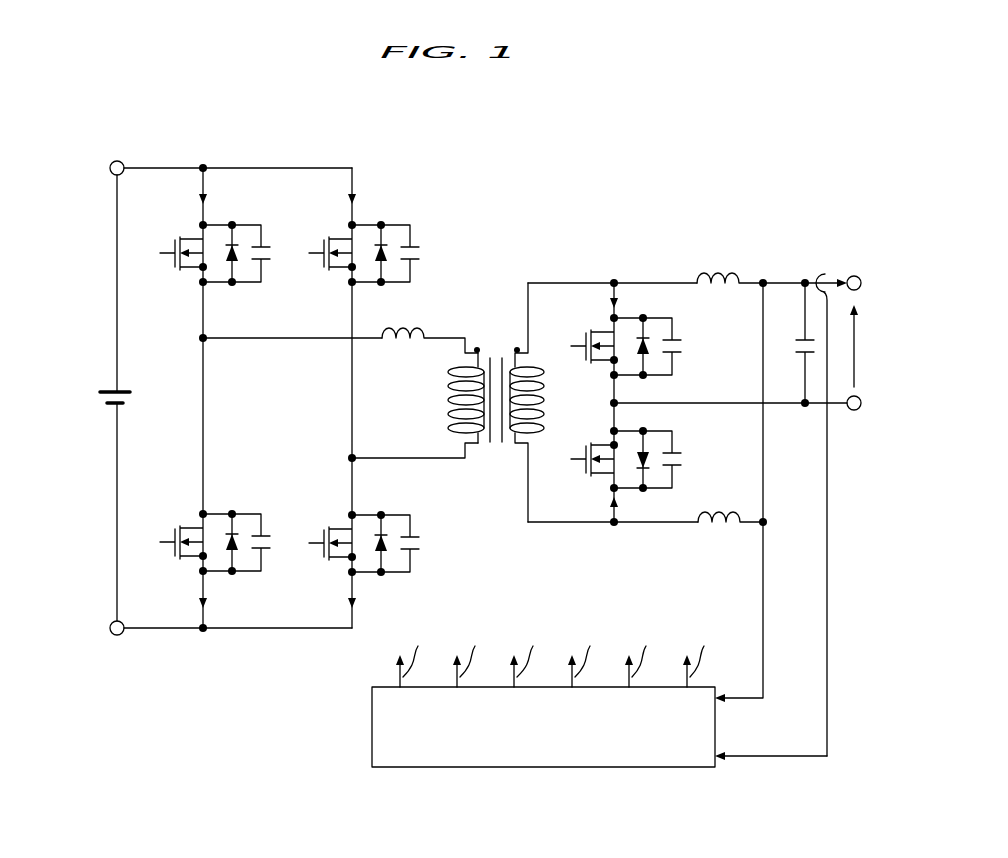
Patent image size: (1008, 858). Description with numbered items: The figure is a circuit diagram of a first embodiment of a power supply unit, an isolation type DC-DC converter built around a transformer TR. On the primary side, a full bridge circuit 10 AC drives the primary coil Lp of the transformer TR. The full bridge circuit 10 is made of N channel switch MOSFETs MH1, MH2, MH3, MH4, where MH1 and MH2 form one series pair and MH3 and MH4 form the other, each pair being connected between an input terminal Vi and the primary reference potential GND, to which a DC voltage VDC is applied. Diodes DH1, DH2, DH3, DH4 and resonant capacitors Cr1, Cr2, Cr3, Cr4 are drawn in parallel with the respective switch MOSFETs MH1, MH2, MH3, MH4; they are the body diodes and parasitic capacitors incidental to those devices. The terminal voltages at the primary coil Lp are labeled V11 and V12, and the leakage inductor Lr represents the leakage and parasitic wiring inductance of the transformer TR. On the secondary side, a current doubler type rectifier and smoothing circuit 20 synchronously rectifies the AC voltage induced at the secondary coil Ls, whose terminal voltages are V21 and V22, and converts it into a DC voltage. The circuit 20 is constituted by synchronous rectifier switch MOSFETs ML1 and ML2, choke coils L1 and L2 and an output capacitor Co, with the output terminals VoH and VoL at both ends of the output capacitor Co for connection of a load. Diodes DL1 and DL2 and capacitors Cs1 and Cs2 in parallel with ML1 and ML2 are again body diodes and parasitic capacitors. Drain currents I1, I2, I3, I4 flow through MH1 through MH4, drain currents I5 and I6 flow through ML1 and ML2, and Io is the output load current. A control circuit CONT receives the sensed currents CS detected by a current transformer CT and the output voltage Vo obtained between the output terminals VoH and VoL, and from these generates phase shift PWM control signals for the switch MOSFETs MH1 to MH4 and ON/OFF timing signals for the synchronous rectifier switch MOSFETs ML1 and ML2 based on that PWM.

The input terminal Vi is at (117, 161).
The primary reference potential GND is at (115, 637).
The DC voltage VDC is at (113, 391).
The full bridge circuit 10 is at (270, 155).
The current doubler type rectifier and smoothing circuit 20 is at (654, 193).
The drain current I1 is at (193, 196).
The drain current I2 is at (191, 599).
The drain current I3 is at (341, 196).
The drain current I4 is at (340, 600).
The drain current I5 is at (623, 300).
The drain current I6 is at (623, 505).
The switch MOSFET MH1 is at (171, 244).
The switch MOSFET MH2 is at (177, 530).
The switch MOSFET MH3 is at (320, 244).
The switch MOSFET MH4 is at (326, 532).
The diode DH1 is at (247, 234).
The diode DH2 is at (246, 525).
The diode DH3 is at (396, 234).
The diode DH4 is at (396, 526).
The resonant capacitor Cr1 is at (246, 270).
The resonant capacitor Cr2 is at (245, 559).
The resonant capacitor Cr3 is at (401, 245).
The resonant capacitor Cr4 is at (403, 535).
The terminal voltage V11 is at (200, 338).
The terminal voltage V12 is at (348, 457).
The terminal voltage V21 is at (530, 283).
The terminal voltage V22 is at (530, 522).
The leakage inductor Lr is at (400, 332).
The transformer TR is at (484, 331).
The primary coil Lp is at (448, 418).
The secondary coil Ls is at (545, 418).
The synchronous rectifier switch MOSFET ML1 is at (583, 337).
The synchronous rectifier switch MOSFET ML2 is at (588, 469).
The diode DL1 is at (663, 306).
The diode DL2 is at (655, 495).
The capacitor Cs1 is at (675, 346).
The capacitor Cs2 is at (675, 459).
The choke coil L1 is at (720, 270).
The choke coil L2 is at (712, 518).
The output capacitor Co is at (800, 341).
The current transformer CT is at (818, 275).
The output current Io is at (826, 274).
The output terminal VoH is at (858, 277).
The output terminal VoL is at (858, 412).
The output voltage Vo is at (865, 346).
The control circuit CONT is at (372, 716).
The sensed currents CS is at (780, 757).